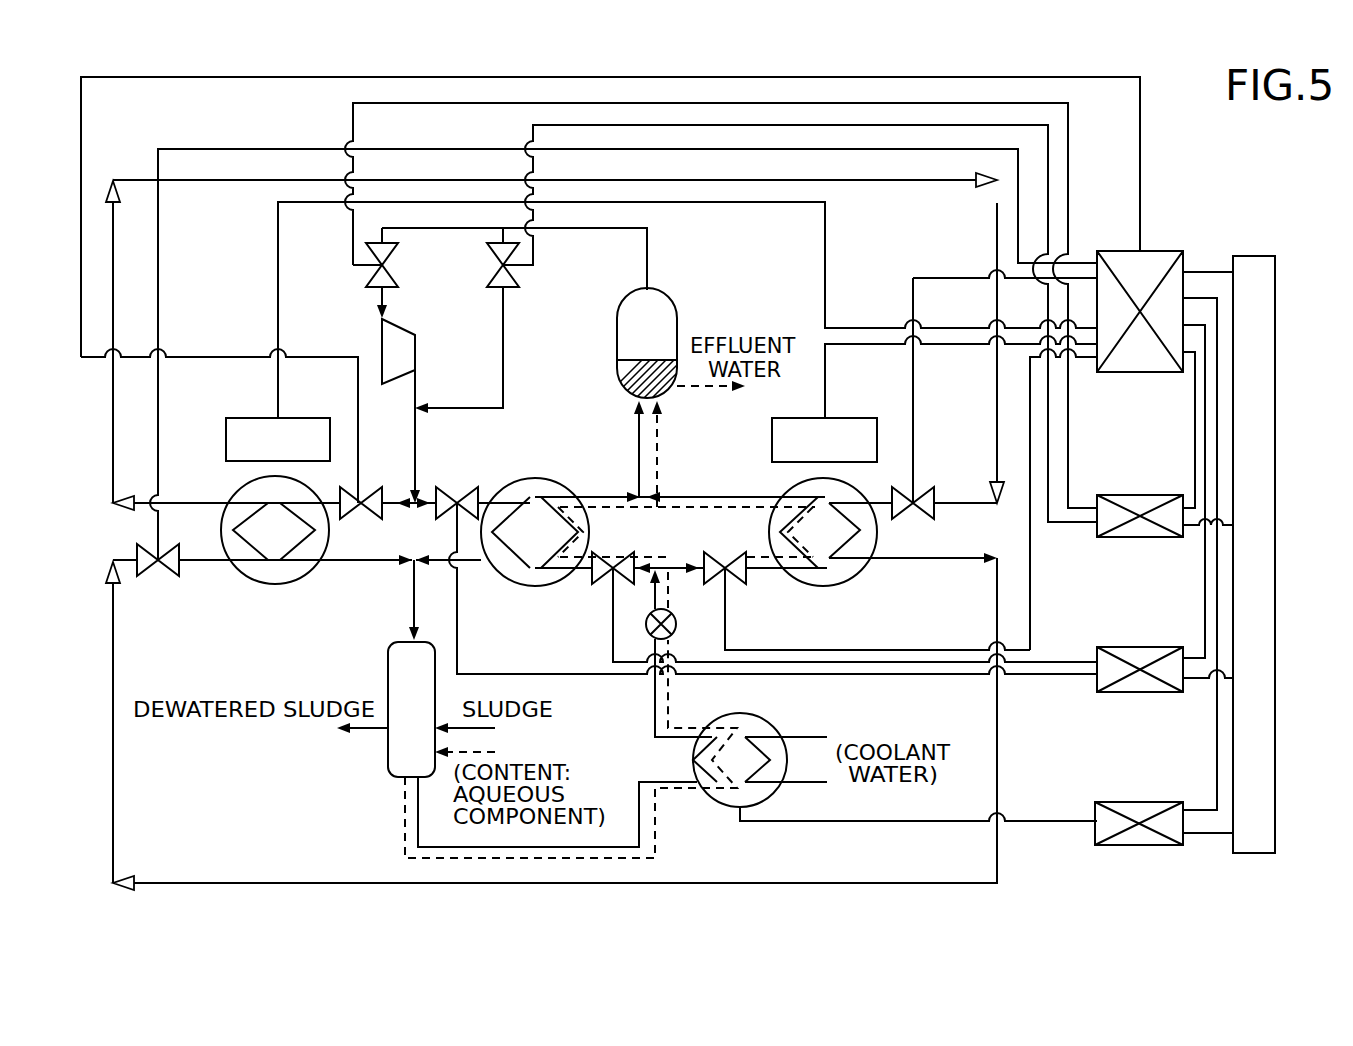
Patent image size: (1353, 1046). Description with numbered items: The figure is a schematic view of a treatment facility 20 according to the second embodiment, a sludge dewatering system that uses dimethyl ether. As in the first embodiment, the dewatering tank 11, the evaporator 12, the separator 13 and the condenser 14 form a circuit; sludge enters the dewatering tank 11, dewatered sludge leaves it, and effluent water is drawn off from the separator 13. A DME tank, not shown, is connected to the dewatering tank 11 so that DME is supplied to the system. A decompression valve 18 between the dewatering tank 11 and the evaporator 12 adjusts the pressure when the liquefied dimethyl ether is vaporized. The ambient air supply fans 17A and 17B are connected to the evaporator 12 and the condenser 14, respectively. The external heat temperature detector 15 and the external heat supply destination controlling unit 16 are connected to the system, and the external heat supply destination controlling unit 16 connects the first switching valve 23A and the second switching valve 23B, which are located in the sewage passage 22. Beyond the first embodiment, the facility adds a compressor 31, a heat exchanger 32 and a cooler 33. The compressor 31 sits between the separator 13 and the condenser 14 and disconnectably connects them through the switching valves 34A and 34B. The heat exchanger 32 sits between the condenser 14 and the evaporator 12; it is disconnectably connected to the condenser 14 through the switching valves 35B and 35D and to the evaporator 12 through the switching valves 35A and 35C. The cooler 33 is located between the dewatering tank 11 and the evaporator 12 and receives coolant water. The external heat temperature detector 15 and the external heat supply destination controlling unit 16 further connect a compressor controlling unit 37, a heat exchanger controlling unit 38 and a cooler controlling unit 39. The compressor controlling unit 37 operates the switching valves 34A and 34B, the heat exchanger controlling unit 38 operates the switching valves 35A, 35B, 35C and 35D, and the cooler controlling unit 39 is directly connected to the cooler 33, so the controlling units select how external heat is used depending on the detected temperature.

The dewatering tank 11 is at (388, 668).
The evaporator 12 is at (812, 586).
The separator 13 is at (678, 322).
The condenser 14 is at (275, 584).
The external heat temperature detector 15 is at (1240, 256).
The external heat supply destination controlling unit 16 is at (1138, 374).
The ambient air supply fan 17A is at (853, 416).
The ambient air supply fan 17B is at (260, 416).
The decompression valve 18 is at (676, 628).
The treatment facility 20 is at (1175, 910).
The sewage passage 22 is at (903, 184).
The first switching valve 23A is at (913, 518).
The second switching valve 23B is at (158, 575).
The compressor 31 is at (416, 352).
The heat exchanger 32 is at (523, 485).
The cooler 33 is at (776, 728).
The switching valve 34A is at (387, 270).
The switching valve 34B is at (489, 268).
The switching valve 35A is at (611, 580).
The switching valve 35B is at (466, 480).
The switching valve 35C is at (727, 582).
The switching valve 35D is at (360, 514).
The compressor controlling unit 37 is at (1140, 539).
The heat exchanger controlling unit 38 is at (1140, 694).
The cooler controlling unit 39 is at (1140, 847).